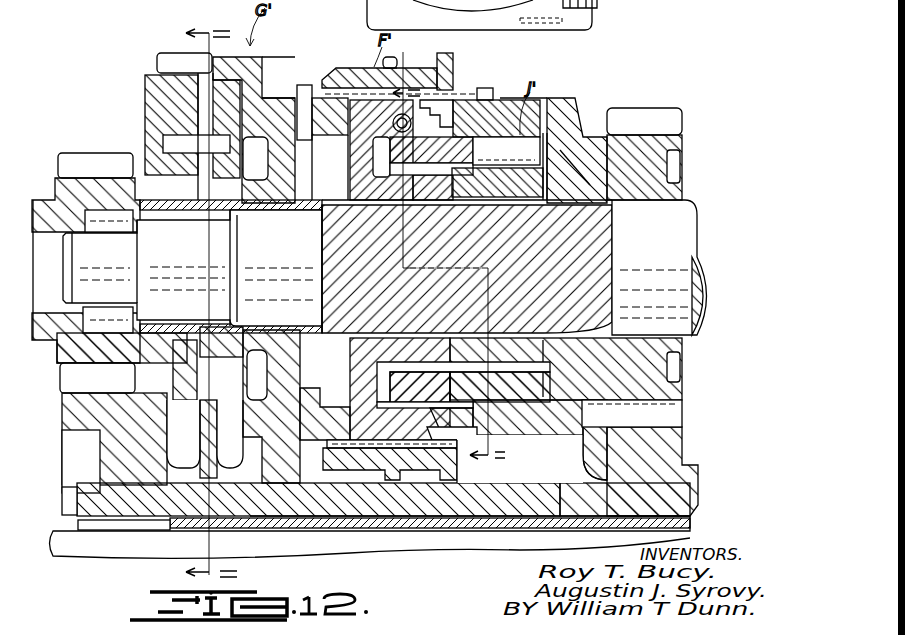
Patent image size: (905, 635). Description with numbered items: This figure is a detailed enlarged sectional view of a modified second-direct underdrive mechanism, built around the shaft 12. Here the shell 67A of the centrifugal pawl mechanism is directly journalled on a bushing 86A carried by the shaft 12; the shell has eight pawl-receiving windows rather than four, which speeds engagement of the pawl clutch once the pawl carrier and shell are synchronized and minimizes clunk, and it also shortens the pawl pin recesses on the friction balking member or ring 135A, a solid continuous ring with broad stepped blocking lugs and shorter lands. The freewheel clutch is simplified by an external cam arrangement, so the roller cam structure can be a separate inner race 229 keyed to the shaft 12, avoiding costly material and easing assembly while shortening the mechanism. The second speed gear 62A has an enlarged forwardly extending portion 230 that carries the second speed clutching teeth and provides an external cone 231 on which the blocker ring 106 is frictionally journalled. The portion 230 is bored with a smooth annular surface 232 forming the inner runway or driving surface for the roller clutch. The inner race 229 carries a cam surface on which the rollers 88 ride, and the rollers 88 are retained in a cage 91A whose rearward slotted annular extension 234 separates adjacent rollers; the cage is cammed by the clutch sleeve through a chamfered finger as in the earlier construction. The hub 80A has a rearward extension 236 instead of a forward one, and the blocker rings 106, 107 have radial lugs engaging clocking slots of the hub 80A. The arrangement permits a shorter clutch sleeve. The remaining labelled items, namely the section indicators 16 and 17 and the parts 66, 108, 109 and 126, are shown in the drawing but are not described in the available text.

The shaft 12 is at (662, 258).
The section line 16 is at (186, 302).
The section line 17 is at (468, 250).
The second speed gear 62A is at (643, 118).
The spacer 66 is at (298, 88).
The shell 67A is at (262, 57).
The hub 80A is at (341, 167).
The bushing 86A is at (266, 224).
The rollers 88 is at (506, 151).
The cage 91A is at (380, 66).
The blocker ring 106 is at (460, 120).
The blocker ring 107 is at (340, 150).
The pin 108 is at (440, 100).
The cover plate 109 is at (312, 90).
The bolt cap 126 is at (166, 64).
The friction balking member or ring 135A is at (268, 78).
The inner race 229 is at (548, 178).
The enlarged forwardly extending portion 230 is at (542, 100).
The external cone 231 is at (496, 118).
The smooth annular surface 232 is at (557, 106).
The rearward slotted annular extension 234 is at (460, 158).
The rearward extension 236 is at (497, 182).